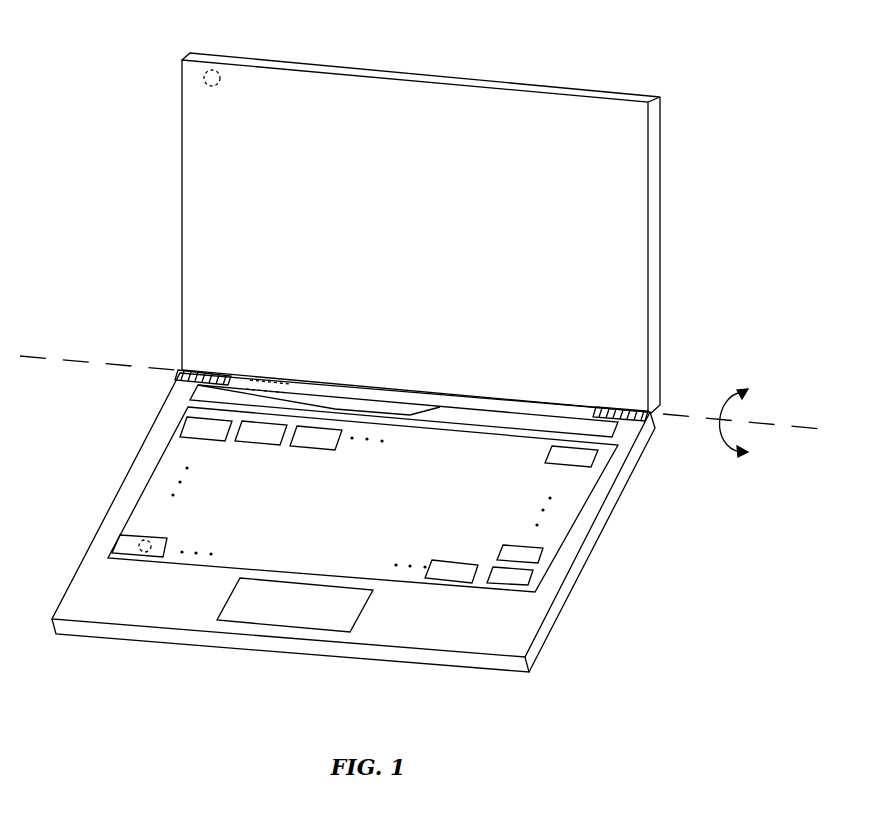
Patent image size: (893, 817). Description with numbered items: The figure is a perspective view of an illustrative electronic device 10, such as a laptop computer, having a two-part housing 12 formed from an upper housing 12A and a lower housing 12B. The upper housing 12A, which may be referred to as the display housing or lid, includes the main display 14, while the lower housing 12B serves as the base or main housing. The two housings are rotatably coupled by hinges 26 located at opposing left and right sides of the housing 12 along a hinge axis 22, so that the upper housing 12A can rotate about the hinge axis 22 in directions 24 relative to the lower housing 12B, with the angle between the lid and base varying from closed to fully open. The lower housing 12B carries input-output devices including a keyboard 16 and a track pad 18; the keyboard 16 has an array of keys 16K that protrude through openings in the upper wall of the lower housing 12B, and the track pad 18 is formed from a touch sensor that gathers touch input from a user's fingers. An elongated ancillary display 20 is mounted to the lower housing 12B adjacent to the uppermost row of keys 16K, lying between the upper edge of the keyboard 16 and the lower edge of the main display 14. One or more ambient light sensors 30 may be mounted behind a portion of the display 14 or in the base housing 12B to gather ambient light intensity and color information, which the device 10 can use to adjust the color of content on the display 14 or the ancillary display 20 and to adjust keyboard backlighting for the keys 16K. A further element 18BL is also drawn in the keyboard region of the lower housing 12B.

The electronic device 10 is at (712, 67).
The housing 12 is at (662, 355).
The upper housing 12A is at (172, 362).
The lower housing 12B is at (164, 376).
The display 14 is at (584, 256).
The keyboard 16 is at (510, 593).
The keys 16K is at (540, 553).
The track pad 18 is at (285, 628).
The button 18BL is at (144, 555).
The ancillary display 20 is at (618, 432).
The hinge axis 22 is at (38, 352).
The directions 24 is at (740, 456).
The hinges 26 is at (204, 371).
The ambient light sensors 30 is at (217, 74).